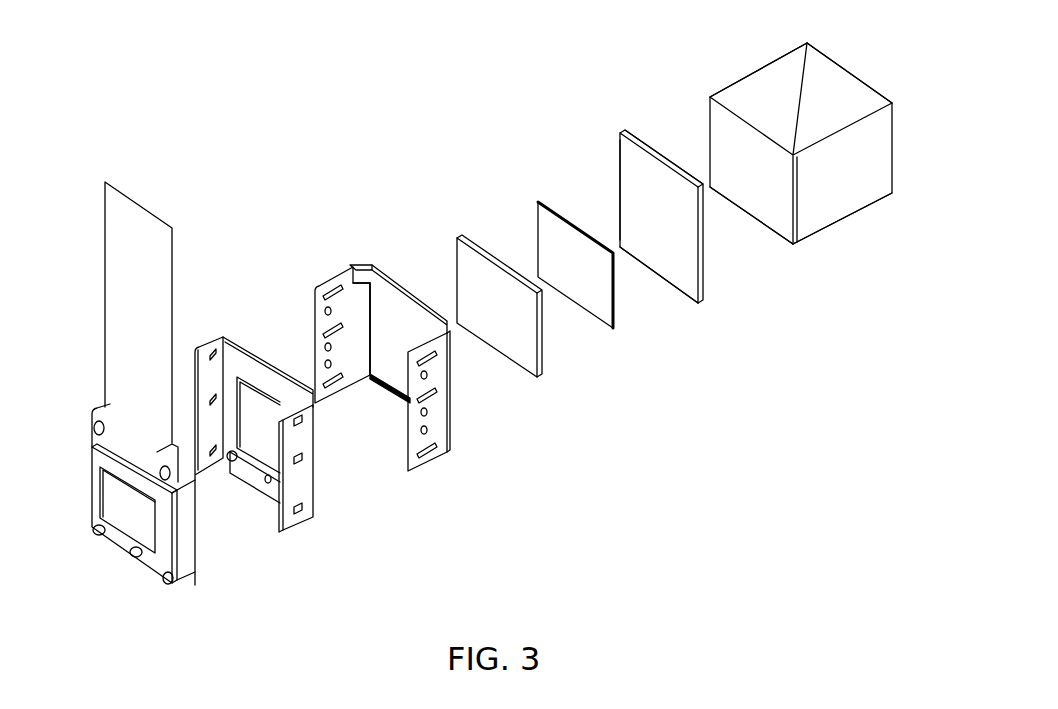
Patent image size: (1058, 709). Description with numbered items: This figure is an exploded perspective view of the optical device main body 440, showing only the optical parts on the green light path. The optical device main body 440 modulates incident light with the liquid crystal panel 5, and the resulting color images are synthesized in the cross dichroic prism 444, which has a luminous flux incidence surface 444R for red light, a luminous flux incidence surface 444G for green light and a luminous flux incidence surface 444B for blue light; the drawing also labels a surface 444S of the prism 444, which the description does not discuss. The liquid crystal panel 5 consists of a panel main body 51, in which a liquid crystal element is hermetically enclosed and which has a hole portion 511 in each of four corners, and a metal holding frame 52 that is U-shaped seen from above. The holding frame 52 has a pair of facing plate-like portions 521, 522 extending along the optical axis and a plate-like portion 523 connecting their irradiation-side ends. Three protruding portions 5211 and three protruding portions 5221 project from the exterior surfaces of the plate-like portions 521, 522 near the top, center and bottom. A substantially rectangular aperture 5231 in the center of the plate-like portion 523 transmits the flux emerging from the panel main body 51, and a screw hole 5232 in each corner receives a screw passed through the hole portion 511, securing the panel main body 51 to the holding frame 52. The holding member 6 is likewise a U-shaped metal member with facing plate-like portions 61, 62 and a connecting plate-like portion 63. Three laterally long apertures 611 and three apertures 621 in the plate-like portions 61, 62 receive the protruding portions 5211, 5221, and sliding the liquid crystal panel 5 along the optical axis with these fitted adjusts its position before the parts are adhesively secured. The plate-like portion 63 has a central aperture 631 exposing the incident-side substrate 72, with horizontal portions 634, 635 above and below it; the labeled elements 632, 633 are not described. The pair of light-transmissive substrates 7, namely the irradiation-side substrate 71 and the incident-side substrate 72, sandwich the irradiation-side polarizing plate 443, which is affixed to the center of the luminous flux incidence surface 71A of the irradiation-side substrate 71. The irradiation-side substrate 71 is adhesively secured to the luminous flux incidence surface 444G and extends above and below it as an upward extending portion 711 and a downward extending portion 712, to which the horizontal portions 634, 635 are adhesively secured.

The optical device main body 440 is at (338, 148).
The liquid crystal panel 5 is at (297, 613).
The panel main body 51 is at (183, 578).
The hole portion 511 is at (163, 583).
The holding frame 52 is at (292, 530).
The plate-like portion 521 is at (212, 342).
The protruding portions 5211 is at (210, 448).
The plate-like portion 522 is at (313, 522).
The protruding portions 5221 is at (313, 424).
The plate-like portion 523 is at (260, 362).
The aperture 5231 is at (252, 465).
The screw hole 5232 is at (272, 400).
The holding member 6 is at (417, 465).
The plate-like portion 61 is at (337, 270).
The apertures 611 is at (352, 305).
The plate-like portion 62 is at (440, 453).
The apertures 621 is at (437, 352).
The plate-like portion 63 is at (394, 272).
The aperture 631 is at (377, 391).
The upper bent portion 632 is at (365, 266).
The inner face 633 is at (427, 328).
The horizontal portion 634 is at (425, 313).
The horizontal portion 635 is at (397, 405).
The pair of light-transmissive substrates 7 is at (618, 256).
The irradiation-side substrate 71 is at (698, 273).
The luminous flux incidence surface 71A is at (628, 178).
The upward extending portion 711 is at (655, 163).
The downward extending portion 712 is at (662, 272).
The incident-side substrate 72 is at (547, 369).
The irradiation-side polarizing plate 443 is at (587, 301).
The cross dichroic prism 444 is at (828, 68).
The luminous flux incidence surface 444R is at (758, 67).
The prism top surface 444S is at (864, 77).
The luminous flux incidence surface 444G is at (772, 212).
The luminous flux incidence surface 444B is at (860, 202).